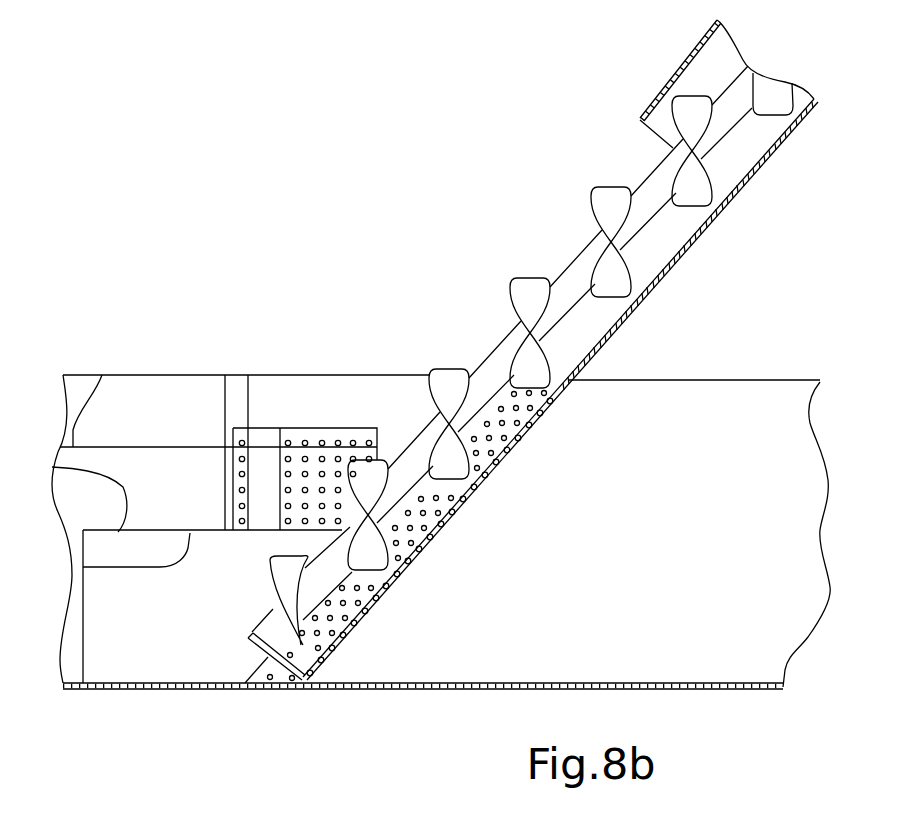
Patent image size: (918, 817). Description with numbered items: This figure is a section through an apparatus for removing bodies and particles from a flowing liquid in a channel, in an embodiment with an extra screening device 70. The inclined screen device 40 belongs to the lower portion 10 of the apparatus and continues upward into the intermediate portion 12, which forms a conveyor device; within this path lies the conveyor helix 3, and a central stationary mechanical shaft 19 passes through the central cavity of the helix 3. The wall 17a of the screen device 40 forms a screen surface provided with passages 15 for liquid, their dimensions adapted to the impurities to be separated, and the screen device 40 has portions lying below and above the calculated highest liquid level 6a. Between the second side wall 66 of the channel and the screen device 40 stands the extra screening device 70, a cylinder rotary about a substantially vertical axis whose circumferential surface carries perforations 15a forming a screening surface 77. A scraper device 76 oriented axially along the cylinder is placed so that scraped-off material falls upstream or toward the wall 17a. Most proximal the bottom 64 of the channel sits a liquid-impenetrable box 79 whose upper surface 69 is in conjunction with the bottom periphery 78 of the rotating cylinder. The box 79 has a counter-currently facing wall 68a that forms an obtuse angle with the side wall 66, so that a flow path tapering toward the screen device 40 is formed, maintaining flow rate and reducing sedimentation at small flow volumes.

The conveyor helix 3 is at (408, 557).
The calculated highest liquid level 6a is at (101, 375).
The lower portion 10 is at (397, 573).
The intermediate portion 12 is at (667, 88).
The passages 15 is at (450, 514).
The perforations or apertures 15a is at (320, 442).
The wall of the screen device 17a is at (403, 573).
The central stationary mechanical shaft 19 is at (480, 403).
The screen device 40 is at (362, 620).
The bottom of the channel 64 is at (118, 689).
The second side wall of the channel 66 is at (117, 393).
The wall of the box 68a is at (153, 645).
The upper surface of the box 69 is at (52, 467).
The extra screening device 70 is at (363, 437).
The scraper device 76 is at (267, 460).
The screening surface 77 is at (235, 465).
The bottom periphery of the rotating cylinder 78 is at (83, 566).
The box 79 is at (202, 650).